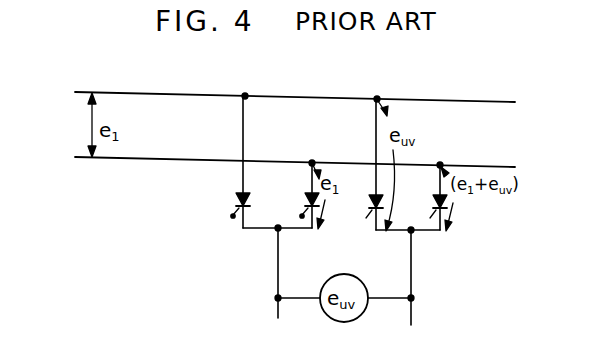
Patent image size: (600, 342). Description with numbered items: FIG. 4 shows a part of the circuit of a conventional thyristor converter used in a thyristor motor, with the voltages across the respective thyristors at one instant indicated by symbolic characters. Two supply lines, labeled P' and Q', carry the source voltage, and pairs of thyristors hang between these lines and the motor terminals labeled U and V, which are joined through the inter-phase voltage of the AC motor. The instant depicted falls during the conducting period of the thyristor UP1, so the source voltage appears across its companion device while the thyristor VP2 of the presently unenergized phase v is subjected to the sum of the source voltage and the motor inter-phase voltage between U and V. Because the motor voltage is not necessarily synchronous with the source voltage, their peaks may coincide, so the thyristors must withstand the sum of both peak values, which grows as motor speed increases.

The thyristor UP1 is at (231, 214).
The thyristor VP2 is at (434, 216).
The output terminal U is at (264, 273).
The output terminal V is at (421, 277).
The supply line P' is at (279, 93).
The supply line Q' is at (278, 158).